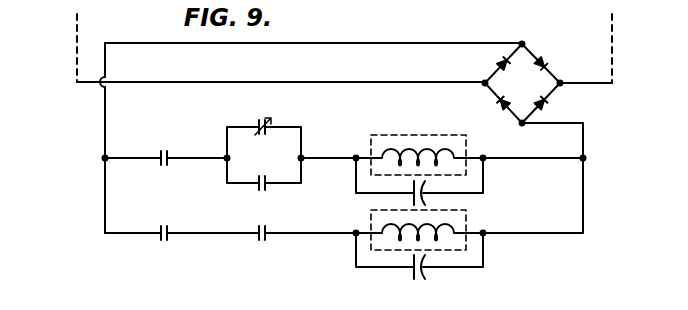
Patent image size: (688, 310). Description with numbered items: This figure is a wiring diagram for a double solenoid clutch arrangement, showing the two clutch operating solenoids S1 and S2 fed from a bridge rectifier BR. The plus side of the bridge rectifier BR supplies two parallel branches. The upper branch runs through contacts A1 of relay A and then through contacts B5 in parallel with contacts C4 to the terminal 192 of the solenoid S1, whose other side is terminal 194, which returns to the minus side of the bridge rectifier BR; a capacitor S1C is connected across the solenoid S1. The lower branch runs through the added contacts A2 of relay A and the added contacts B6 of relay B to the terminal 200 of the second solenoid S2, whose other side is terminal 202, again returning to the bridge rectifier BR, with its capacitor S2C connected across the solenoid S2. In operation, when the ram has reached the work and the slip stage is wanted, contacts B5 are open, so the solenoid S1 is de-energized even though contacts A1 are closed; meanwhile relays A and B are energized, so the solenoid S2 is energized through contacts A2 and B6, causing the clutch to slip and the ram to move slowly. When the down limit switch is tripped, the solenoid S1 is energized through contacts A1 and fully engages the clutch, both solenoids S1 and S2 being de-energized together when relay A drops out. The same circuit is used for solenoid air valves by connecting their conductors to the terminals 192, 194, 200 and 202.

The contacts A1 is at (166, 150).
The contacts A2 is at (166, 225).
The contacts B5 is at (262, 117).
The contacts B6 is at (262, 244).
The contacts C4 is at (262, 192).
The terminal 192 is at (356, 158).
The terminal 194 is at (483, 158).
The terminal 200 is at (356, 233).
The terminal 202 is at (483, 233).
The solenoid S1 is at (419, 155).
The solenoid S2 is at (419, 230).
The capacitor S1C is at (419, 181).
The capacitor S2C is at (419, 258).
The bridge rectifier BR is at (522, 83).